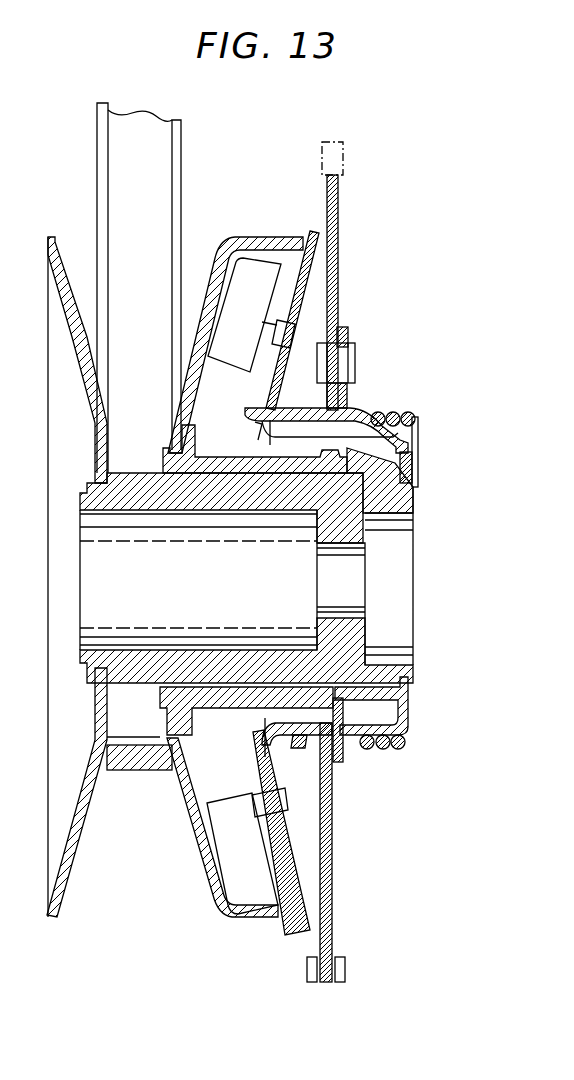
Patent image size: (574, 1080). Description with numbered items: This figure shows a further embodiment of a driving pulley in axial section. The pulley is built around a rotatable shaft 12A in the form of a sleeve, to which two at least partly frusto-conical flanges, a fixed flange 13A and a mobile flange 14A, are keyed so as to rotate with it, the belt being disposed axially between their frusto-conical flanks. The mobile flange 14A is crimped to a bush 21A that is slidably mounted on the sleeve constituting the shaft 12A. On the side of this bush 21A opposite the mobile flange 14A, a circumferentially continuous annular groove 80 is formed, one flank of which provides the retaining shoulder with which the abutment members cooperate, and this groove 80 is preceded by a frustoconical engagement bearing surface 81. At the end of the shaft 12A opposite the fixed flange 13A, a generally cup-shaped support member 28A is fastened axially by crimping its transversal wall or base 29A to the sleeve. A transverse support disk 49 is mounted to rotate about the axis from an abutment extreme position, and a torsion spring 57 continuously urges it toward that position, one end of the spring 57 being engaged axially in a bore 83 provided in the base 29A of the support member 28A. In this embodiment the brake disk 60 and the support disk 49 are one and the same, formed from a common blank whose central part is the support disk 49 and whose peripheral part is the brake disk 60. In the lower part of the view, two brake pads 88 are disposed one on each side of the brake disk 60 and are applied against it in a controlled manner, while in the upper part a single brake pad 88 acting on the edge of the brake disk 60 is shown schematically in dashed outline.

The fixed flange 13A is at (62, 246).
The mobile flange 14A is at (238, 239).
The bush 21A is at (218, 456).
The rotatable shaft 12A is at (140, 471).
The brake pad 88 is at (345, 161).
The brake disk 60 is at (341, 241).
The support disk 49 is at (342, 323).
The support member 28A is at (366, 410).
The bore 83 is at (412, 454).
The base 29A is at (419, 469).
The groove 80 is at (348, 462).
The frustoconical engagement bearing surface 81 is at (405, 704).
The torsion spring 57 is at (387, 753).